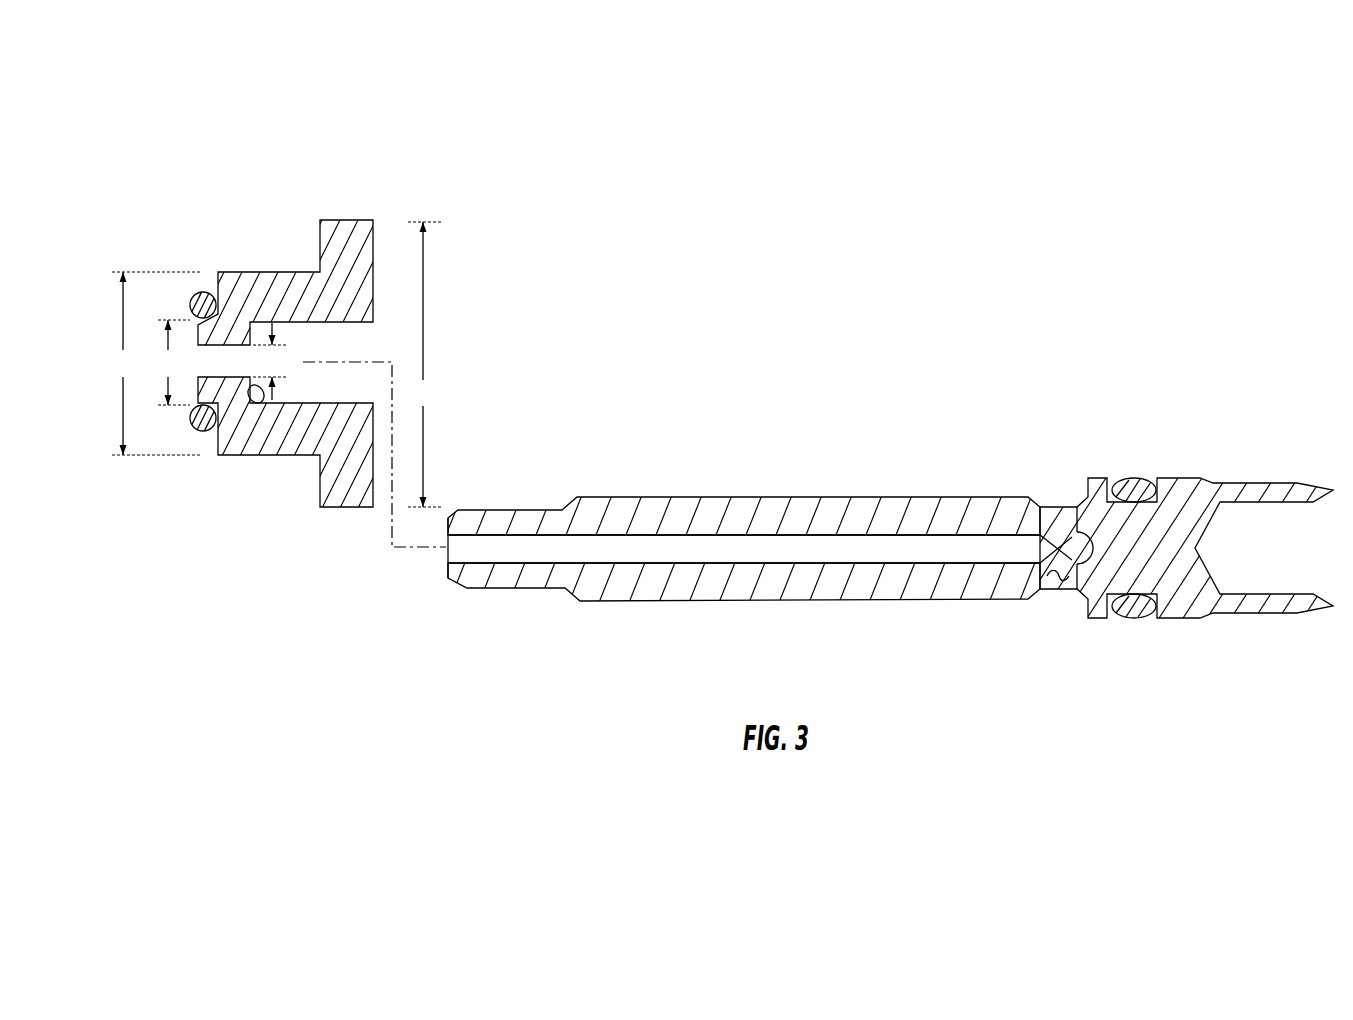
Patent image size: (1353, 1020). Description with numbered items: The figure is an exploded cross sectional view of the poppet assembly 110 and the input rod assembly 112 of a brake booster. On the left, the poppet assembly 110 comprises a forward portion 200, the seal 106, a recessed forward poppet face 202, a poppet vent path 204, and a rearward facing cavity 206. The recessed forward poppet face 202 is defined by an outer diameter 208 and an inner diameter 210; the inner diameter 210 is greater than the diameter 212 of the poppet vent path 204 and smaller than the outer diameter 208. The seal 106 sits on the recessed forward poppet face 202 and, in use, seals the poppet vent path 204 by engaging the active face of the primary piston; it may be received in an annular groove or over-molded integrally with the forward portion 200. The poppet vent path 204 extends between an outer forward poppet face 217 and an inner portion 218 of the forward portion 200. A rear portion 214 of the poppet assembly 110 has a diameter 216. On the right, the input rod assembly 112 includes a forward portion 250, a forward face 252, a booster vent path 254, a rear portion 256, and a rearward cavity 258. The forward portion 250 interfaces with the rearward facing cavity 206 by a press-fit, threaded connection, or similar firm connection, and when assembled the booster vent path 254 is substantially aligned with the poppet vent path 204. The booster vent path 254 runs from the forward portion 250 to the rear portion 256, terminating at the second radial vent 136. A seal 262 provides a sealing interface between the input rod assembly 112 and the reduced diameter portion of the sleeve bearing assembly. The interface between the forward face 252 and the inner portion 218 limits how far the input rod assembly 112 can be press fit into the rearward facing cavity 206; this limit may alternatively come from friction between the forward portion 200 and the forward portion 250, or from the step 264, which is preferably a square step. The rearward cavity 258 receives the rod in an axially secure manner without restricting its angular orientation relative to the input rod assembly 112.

The poppet assembly 110 is at (158, 176).
The input rod assembly 112 is at (594, 633).
The seal 106 is at (192, 426).
The second radial vent 136 is at (1066, 582).
The forward portion 200 is at (172, 432).
The recessed forward poppet face 202 is at (213, 289).
The poppet vent path 204 is at (200, 348).
The rearward facing cavity 206 is at (355, 333).
The outer diameter 208 is at (151, 363).
The inner diameter 210 is at (170, 362).
The diameter of the poppet vent path 212 is at (271, 361).
The rear portion 214 is at (380, 248).
The diameter 216 is at (424, 364).
The outer forward poppet face 217 is at (195, 320).
The inner portion 218 is at (267, 400).
The forward portion 250 is at (436, 573).
The forward face 252 is at (446, 522).
The booster vent path 254 is at (674, 563).
The rear portion 256 is at (1255, 636).
The rearward cavity 258 is at (1288, 503).
The seal 262 is at (1128, 619).
The step 264 is at (572, 505).